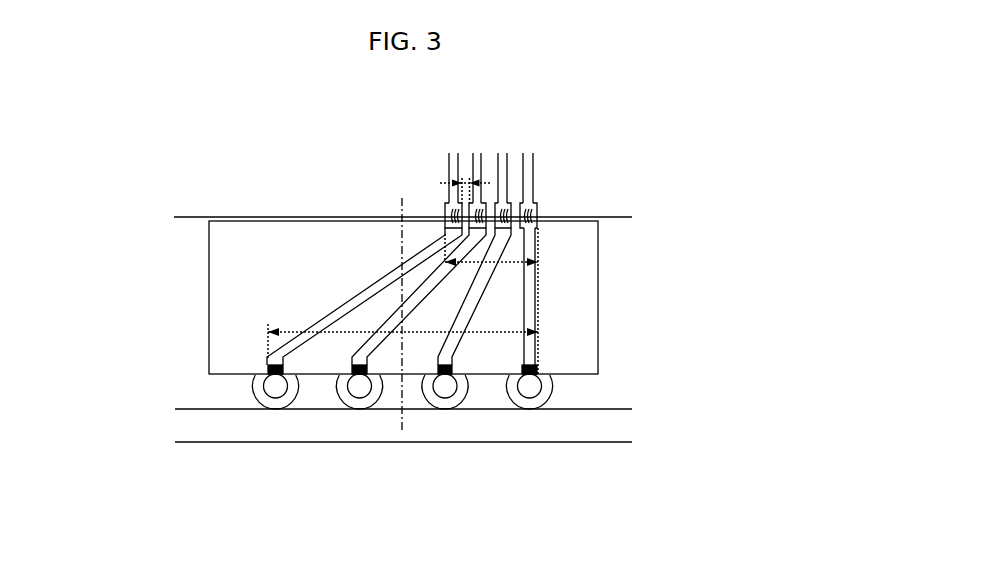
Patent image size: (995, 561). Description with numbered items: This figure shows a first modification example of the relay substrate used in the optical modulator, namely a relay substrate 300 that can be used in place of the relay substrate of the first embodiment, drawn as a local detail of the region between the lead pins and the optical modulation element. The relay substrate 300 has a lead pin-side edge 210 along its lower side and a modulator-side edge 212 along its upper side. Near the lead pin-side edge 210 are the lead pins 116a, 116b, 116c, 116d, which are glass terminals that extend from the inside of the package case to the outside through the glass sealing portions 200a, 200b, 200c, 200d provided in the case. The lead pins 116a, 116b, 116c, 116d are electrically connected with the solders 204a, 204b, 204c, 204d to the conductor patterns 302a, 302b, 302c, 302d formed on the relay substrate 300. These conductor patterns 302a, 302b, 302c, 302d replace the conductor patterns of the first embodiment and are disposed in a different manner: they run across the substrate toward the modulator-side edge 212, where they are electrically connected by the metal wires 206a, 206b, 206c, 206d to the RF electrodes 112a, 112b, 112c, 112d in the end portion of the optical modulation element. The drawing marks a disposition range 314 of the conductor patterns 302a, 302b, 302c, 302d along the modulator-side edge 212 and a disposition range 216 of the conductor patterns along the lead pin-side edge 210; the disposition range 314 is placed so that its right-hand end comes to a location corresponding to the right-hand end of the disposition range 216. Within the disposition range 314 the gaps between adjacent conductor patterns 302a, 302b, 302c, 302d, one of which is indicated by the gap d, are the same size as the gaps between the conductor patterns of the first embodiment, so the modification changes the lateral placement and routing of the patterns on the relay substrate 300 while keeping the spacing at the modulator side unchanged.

The modulator-side edge 212 is at (270, 221).
The relay substrate 300 is at (227, 337).
The lead pin-side edge 210 is at (432, 422).
The RF electrode 112a is at (575, 159).
The RF electrode 112b is at (530, 146).
The RF electrode 112c is at (449, 144).
The RF electrode 112d is at (400, 161).
The metal wire 206a is at (586, 205).
The metal wire 206b is at (556, 190).
The metal wire 206c is at (414, 191).
The metal wire 206d is at (395, 208).
The conductor pattern 302a is at (599, 296).
The conductor pattern 302b is at (556, 296).
The conductor pattern 302c is at (369, 296).
The conductor pattern 302d is at (364, 296).
The solder 204a is at (607, 354).
The solder 204b is at (425, 439).
The solder 204c is at (339, 440).
The solder 204d is at (268, 366).
The glass sealing portion 200a is at (585, 448).
The glass sealing portion 200b is at (487, 444).
The glass sealing portion 200c is at (318, 443).
The glass sealing portion 200d is at (234, 441).
The lead pin 116a is at (568, 459).
The lead pin 116b is at (457, 463).
The lead pin 116c is at (371, 463).
The lead pin 116d is at (182, 427).
The pad gap distance d is at (465, 178).
The disposition range 314 is at (468, 263).
The disposition range 216 is at (477, 334).